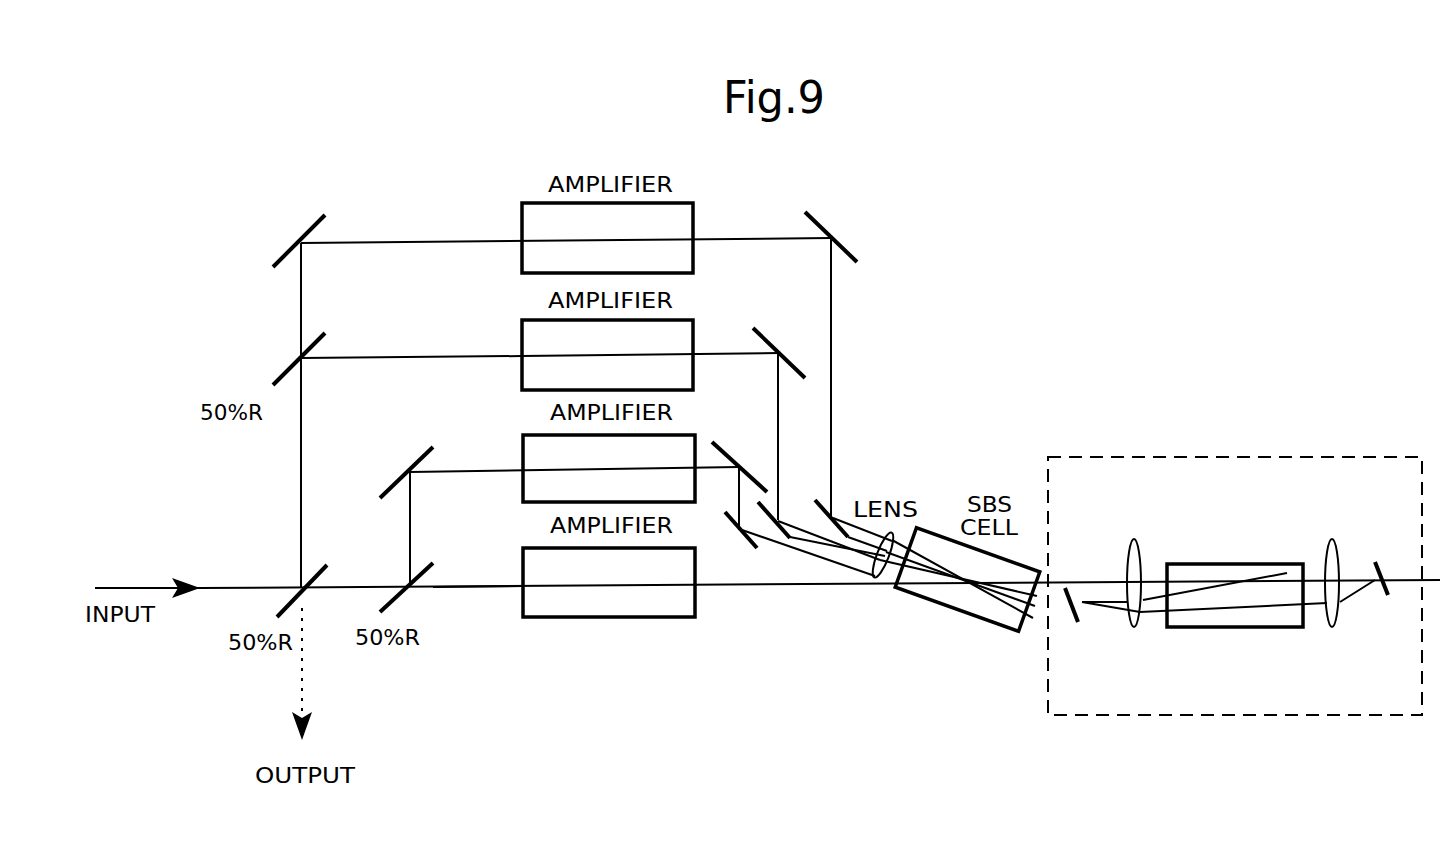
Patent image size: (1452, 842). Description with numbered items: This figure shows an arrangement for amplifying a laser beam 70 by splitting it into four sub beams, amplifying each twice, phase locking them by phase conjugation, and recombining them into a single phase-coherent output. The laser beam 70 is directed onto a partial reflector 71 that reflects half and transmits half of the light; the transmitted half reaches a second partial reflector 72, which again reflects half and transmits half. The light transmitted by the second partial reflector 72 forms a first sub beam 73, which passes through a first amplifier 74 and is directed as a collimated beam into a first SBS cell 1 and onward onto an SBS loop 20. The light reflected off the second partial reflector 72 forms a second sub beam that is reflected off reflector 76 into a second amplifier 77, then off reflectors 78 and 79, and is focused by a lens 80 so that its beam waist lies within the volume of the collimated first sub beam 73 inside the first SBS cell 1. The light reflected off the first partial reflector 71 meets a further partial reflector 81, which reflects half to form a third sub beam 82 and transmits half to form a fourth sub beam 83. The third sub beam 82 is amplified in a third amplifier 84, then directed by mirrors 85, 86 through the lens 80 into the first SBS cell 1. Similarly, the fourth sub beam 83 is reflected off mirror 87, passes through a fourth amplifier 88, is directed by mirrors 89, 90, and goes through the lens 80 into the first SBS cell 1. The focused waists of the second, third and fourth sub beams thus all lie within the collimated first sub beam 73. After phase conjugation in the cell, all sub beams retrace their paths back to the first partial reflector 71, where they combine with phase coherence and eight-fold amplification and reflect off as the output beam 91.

The first SBS cell 1 is at (972, 625).
The SBS loop 20 is at (1257, 735).
The laser beam 70 is at (132, 588).
The partial reflector 71 is at (284, 603).
The second partial reflector 72 is at (398, 602).
The first sub beam 73 is at (487, 587).
The first amplifier 74 is at (618, 620).
The reflector 76 is at (410, 457).
The second amplifier 77 is at (523, 456).
The reflector 78 is at (730, 453).
The reflector 79 is at (743, 545).
The lens 80 is at (876, 575).
The partial reflector 81 is at (287, 372).
The third sub beam 82 is at (390, 358).
The fourth sub beam 83 is at (299, 302).
The third amplifier 84 is at (522, 340).
The mirror 85 is at (767, 338).
The mirror 86 is at (772, 505).
The mirror 87 is at (310, 227).
The fourth amplifier 88 is at (522, 220).
The mirror 89 is at (818, 221).
The mirror 90 is at (820, 503).
The output beam 91 is at (303, 675).